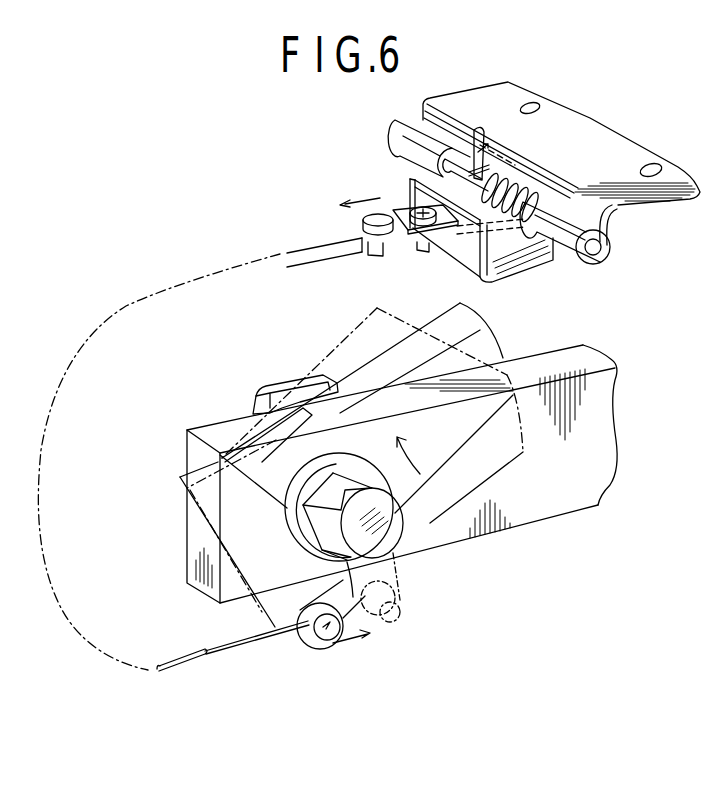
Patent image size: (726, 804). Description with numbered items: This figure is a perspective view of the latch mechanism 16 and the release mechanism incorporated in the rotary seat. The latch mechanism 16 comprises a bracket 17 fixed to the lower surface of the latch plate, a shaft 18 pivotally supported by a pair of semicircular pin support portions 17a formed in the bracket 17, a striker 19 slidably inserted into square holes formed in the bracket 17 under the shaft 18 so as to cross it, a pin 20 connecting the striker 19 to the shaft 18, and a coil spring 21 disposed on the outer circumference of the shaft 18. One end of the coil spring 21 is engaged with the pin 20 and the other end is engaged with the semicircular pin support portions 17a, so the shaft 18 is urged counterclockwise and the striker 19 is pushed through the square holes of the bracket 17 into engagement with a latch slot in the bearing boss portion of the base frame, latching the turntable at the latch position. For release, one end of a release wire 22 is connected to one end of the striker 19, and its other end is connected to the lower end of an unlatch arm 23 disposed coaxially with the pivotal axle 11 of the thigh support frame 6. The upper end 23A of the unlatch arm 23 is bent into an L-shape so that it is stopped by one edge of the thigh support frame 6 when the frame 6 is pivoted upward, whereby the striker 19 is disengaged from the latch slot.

The thigh support frame 6 is at (557, 508).
The pivotal axle 11 is at (383, 523).
The latch mechanism 16 is at (338, 144).
The bracket 17 is at (612, 142).
The semicircular pin support portions 17a is at (408, 147).
The shaft 18 is at (608, 240).
The striker 19 is at (446, 238).
The pin 20 is at (490, 150).
The coil spring 21 is at (522, 178).
The release wire 22 is at (329, 247).
The unlatch arm 23 is at (347, 607).
The upper end of the unlatch arm 23A is at (282, 386).